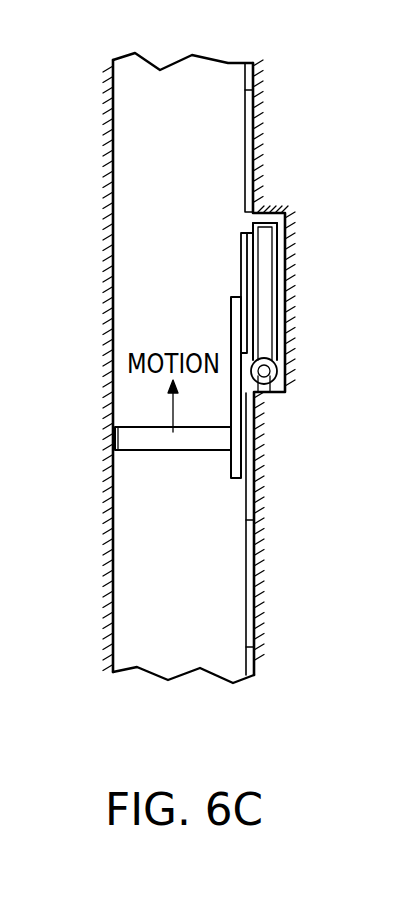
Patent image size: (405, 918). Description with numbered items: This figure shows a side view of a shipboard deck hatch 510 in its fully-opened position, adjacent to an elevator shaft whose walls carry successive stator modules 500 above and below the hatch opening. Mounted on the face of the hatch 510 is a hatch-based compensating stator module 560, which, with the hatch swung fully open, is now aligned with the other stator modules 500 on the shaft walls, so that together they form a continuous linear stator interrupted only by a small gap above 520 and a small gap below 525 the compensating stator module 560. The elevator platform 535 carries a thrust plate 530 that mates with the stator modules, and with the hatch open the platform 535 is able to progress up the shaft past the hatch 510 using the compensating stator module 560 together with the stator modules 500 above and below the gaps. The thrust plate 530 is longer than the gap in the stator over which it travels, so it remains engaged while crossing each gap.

The stator module 500 is at (253, 67).
The deck hatch 510 is at (265, 295).
The gap above the compensating stator module 520 is at (250, 222).
The gap below the compensating stator module 525 is at (262, 398).
The thrust plate 530 is at (238, 466).
The elevator platform 535 is at (128, 437).
The compensating stator module 560 is at (250, 247).